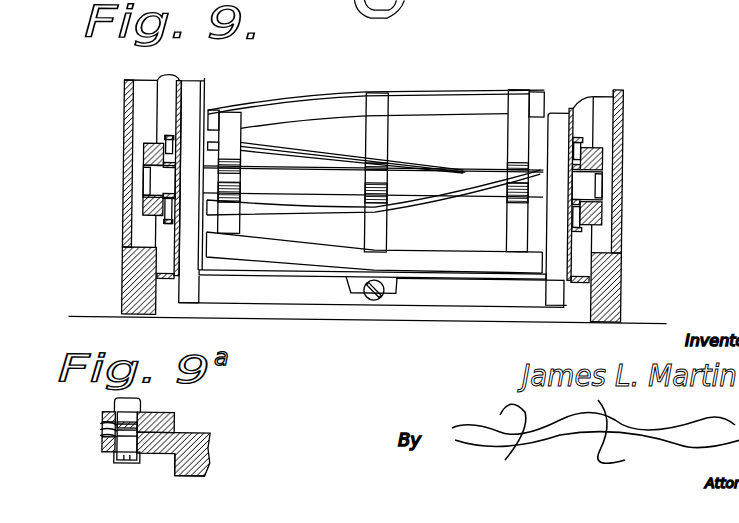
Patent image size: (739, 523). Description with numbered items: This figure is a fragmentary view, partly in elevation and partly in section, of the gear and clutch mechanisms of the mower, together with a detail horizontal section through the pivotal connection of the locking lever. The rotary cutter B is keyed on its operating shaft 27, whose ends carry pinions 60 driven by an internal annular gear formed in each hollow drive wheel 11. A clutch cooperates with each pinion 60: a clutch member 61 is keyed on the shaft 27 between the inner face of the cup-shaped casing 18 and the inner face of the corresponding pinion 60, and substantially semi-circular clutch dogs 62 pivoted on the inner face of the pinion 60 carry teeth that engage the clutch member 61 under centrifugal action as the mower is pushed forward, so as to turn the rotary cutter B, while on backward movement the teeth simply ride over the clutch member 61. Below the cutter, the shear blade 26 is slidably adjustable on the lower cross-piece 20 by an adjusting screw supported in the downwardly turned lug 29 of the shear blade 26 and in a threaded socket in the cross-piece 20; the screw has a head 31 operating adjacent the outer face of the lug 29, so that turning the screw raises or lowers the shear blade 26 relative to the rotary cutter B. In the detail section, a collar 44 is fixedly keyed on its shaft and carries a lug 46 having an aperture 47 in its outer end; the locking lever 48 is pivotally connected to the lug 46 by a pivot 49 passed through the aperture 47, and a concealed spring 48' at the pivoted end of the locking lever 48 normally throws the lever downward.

In FIG. 9, the drive wheel 11 is at (110, 104).
In FIG. 9, the cup-shaped casing 18 is at (98, 273).
In FIG. 9, the lower cross-piece 20 is at (450, 292).
In FIG. 9, the shear blade 26 is at (490, 277).
In FIG. 9, the operating shaft 27 is at (468, 176).
In FIG. 9, the downwardly turned lug 29 is at (358, 285).
In FIG. 9, the head 31 is at (373, 300).
In FIG. 9, the pinion 60 is at (143, 153).
In FIG. 9, the clutch member 61 is at (143, 206).
In FIG. 9, the clutch dog 62 is at (165, 139).
In FIG. 9, the rotary cutter B is at (318, 94).
In FIG. 9a, the collar 44 is at (200, 478).
In FIG. 9a, the lug 46 is at (160, 456).
In FIG. 9a, the aperture 47 is at (108, 453).
In FIG. 9a, the locking lever 48 is at (150, 424).
In FIG. 9a, the concealed spring 48' is at (97, 413).
In FIG. 9a, the pivot 49 is at (122, 466).